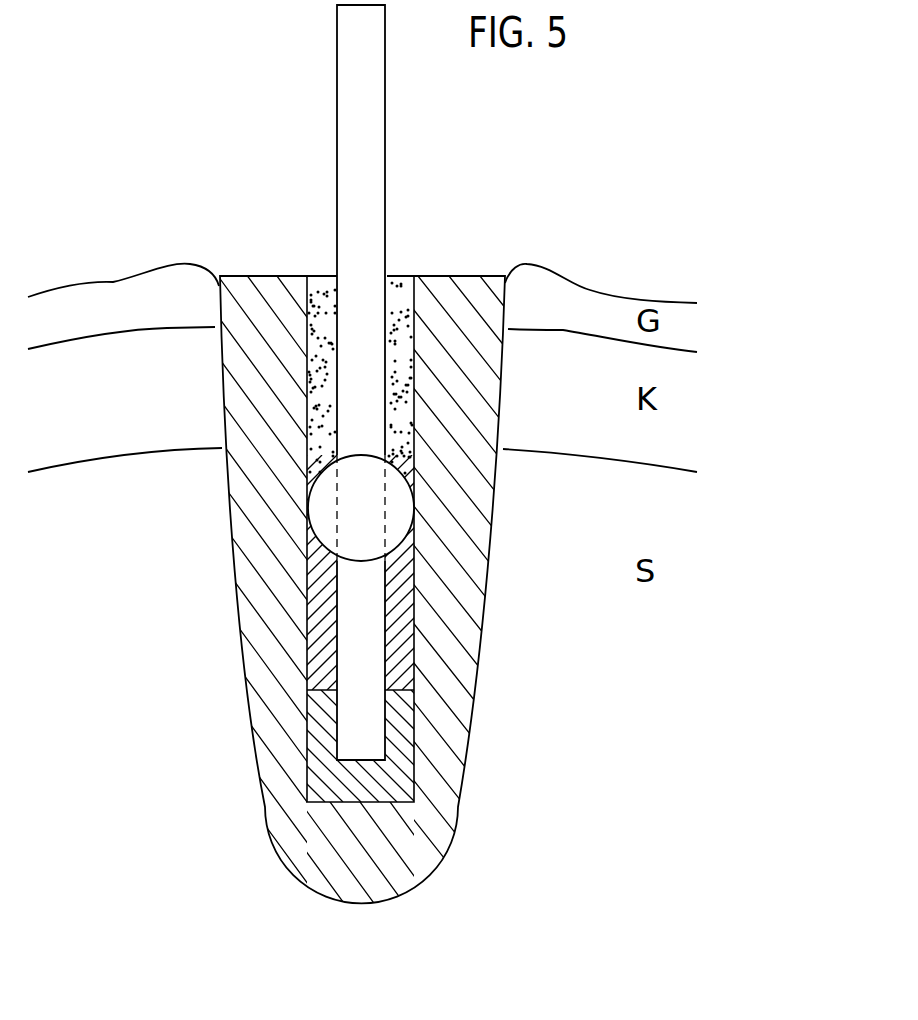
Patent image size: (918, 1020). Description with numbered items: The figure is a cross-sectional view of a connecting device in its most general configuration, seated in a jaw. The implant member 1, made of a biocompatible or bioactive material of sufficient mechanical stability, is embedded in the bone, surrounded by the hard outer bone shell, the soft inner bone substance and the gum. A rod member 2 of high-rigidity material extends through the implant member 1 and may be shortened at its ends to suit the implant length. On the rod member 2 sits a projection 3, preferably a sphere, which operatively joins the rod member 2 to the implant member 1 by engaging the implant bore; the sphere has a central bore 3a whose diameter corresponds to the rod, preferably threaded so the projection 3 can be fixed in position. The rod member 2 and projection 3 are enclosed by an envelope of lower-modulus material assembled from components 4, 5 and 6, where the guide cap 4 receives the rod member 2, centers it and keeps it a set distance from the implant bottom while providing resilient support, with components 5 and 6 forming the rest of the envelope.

The implant member 1 is at (315, 841).
The rod member 2 is at (348, 100).
The projection 3 is at (322, 510).
The central bore 3a is at (373, 509).
The guide cap 4 is at (317, 737).
The envelope component 5 is at (323, 613).
The envelope component 6 is at (320, 282).